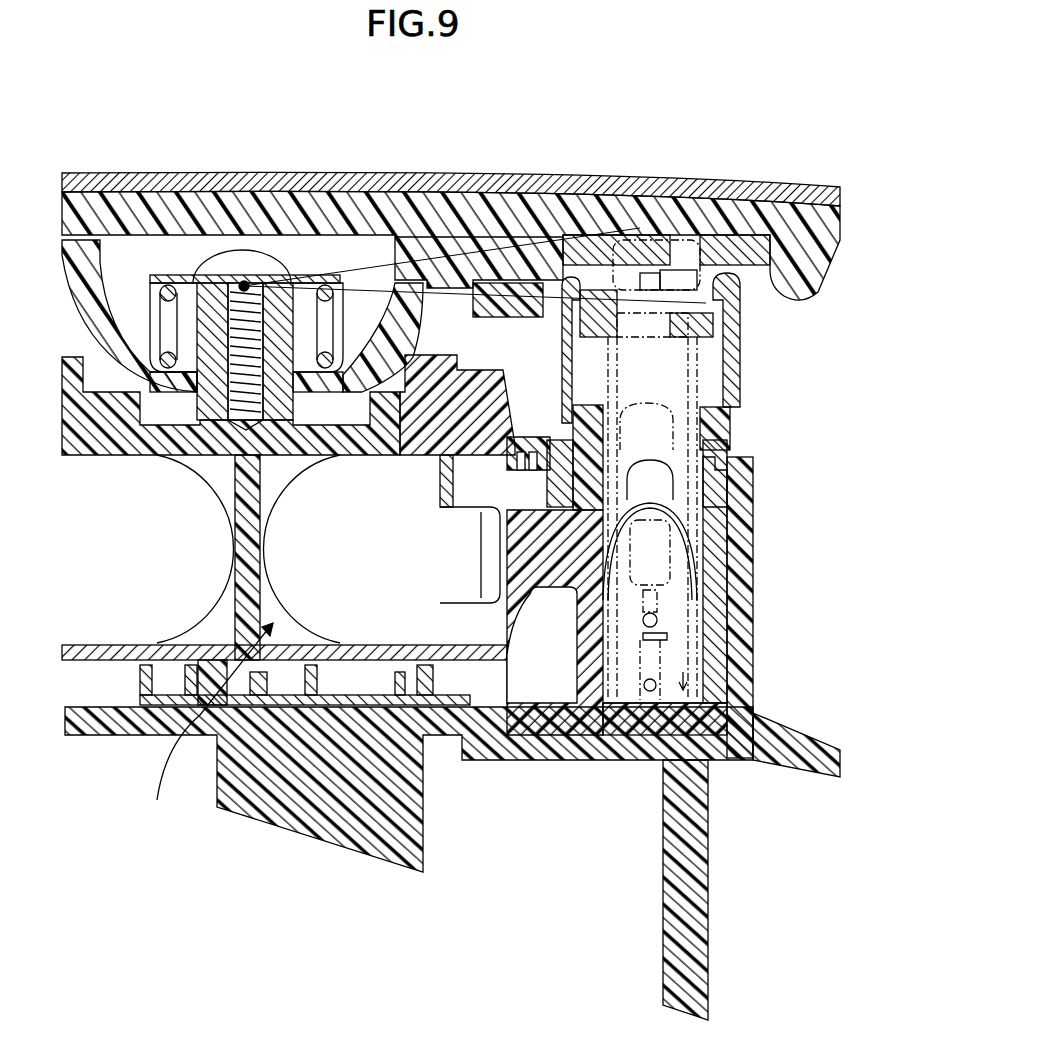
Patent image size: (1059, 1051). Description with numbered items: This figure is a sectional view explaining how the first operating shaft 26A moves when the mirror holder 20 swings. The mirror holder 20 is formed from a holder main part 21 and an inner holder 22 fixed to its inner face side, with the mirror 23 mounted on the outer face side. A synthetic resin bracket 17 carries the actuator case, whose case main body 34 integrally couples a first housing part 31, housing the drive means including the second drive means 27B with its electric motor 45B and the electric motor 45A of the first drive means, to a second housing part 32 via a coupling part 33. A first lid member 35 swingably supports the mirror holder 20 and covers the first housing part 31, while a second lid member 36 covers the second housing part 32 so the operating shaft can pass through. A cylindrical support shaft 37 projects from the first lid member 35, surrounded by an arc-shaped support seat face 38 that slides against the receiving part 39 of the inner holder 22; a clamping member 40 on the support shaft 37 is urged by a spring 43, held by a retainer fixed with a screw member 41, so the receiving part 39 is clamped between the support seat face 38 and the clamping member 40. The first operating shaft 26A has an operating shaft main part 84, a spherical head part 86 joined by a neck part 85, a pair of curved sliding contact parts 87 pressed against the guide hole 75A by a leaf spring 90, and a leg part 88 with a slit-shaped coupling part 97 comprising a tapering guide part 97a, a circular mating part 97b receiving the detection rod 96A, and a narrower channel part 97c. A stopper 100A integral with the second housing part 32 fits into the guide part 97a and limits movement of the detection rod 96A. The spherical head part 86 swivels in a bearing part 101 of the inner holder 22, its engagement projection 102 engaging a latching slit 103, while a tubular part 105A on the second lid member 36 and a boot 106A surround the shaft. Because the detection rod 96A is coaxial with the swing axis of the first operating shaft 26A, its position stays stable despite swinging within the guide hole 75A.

The bracket 17 is at (498, 758).
The mirror holder 20 is at (370, 112).
The holder main part 21 is at (280, 192).
The inner holder 22 is at (400, 190).
The mirror 23 is at (127, 183).
The first operating shaft 26A is at (610, 380).
The second drive means 27B is at (206, 728).
The first housing part 31 is at (507, 690).
The second housing part 32 is at (620, 705).
The coupling part 33 is at (557, 690).
The case main body 34 is at (627, 835).
The first lid member 35 is at (405, 472).
The second lid member 36 is at (573, 460).
The support shaft 37 is at (208, 280).
The support seat face 38 is at (158, 393).
The receiving part 39 is at (82, 372).
The clamping member 40 is at (128, 347).
The screw member 41 is at (242, 258).
The spring 43 is at (160, 290).
The electric motor 45A is at (147, 562).
The electric motor 45B is at (371, 562).
The guide hole 75A is at (700, 670).
The operating shaft main part 84 is at (660, 430).
The neck part 85 is at (698, 350).
The spherical head part 86 is at (700, 300).
The curved sliding contact parts 87 is at (607, 583).
The leg part 88 is at (703, 553).
The leaf spring 90 is at (700, 477).
The detection rod 96A is at (657, 616).
The coupling part 97 is at (700, 572).
The guide part 97a is at (700, 640).
The mating part 97b is at (655, 615).
The channel part 97c is at (657, 598).
The stopper 100A is at (733, 757).
The bearing part 101 is at (638, 385).
The engagement projection 102 is at (672, 300).
The latching slit 103 is at (698, 300).
The tubular part 105A is at (723, 402).
The boot 106A is at (738, 340).